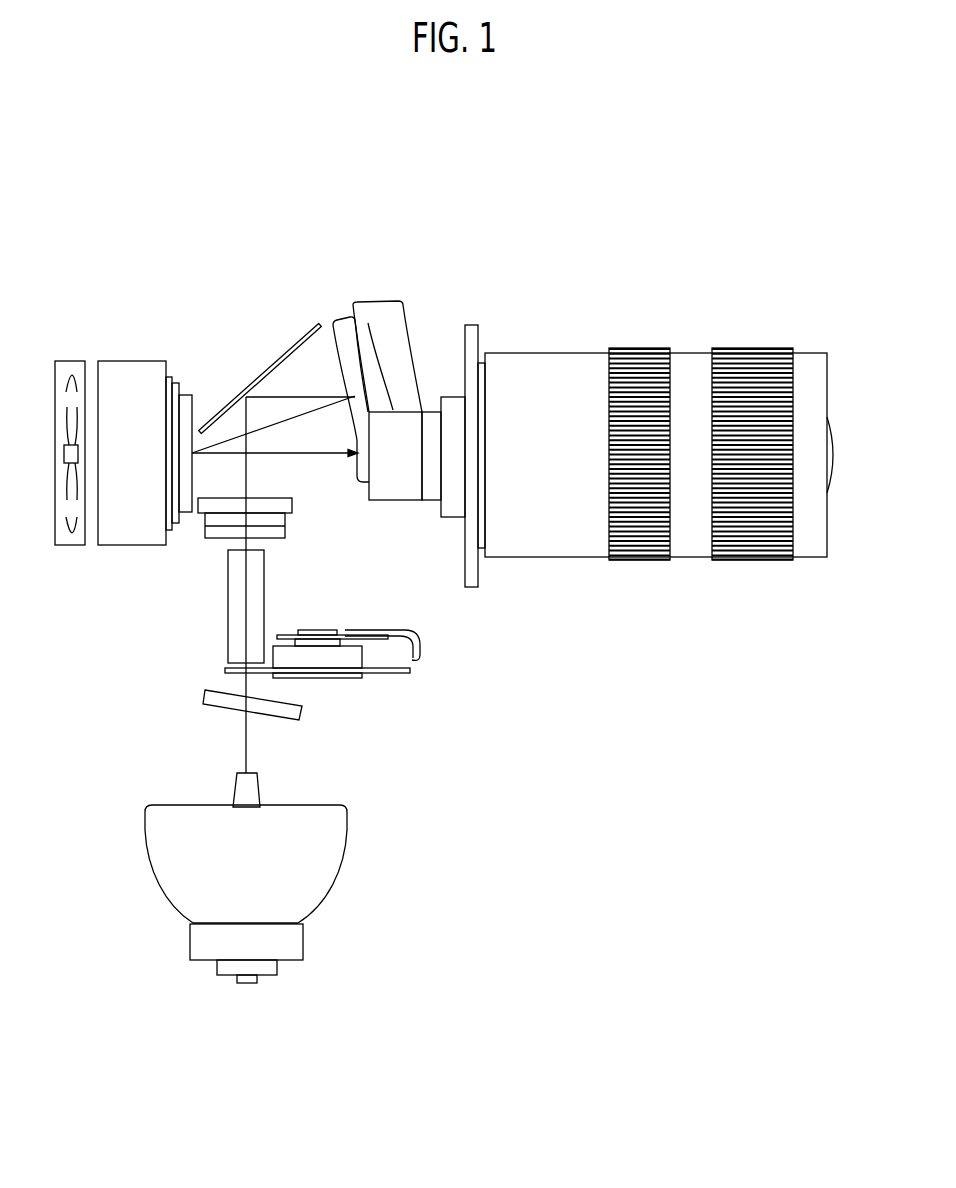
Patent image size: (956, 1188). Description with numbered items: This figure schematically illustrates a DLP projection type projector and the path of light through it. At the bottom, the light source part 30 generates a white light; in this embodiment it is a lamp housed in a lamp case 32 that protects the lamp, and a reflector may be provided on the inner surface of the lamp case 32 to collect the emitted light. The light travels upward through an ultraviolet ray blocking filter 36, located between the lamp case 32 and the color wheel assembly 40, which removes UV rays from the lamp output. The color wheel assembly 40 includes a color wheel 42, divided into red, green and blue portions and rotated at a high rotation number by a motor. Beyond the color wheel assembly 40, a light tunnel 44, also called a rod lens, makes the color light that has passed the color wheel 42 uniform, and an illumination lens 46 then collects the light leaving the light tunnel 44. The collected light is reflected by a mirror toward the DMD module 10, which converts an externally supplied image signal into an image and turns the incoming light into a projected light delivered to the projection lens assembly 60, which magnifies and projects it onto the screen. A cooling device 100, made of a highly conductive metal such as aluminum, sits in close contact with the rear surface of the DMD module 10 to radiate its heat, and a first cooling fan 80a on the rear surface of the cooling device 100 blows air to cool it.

The first cooling fan 80a is at (68, 352).
The cooling device 100 is at (128, 352).
The DMD module 10 is at (186, 394).
The illumination lens 46 is at (286, 531).
The light tunnel 44 is at (264, 585).
The ultraviolet ray blocking filter 36 is at (203, 695).
The color wheel 42 is at (390, 674).
The color wheel assembly 40 is at (360, 686).
The light source part 30 is at (215, 878).
The lamp case 32 is at (323, 897).
The projection lens assembly 60 is at (826, 576).